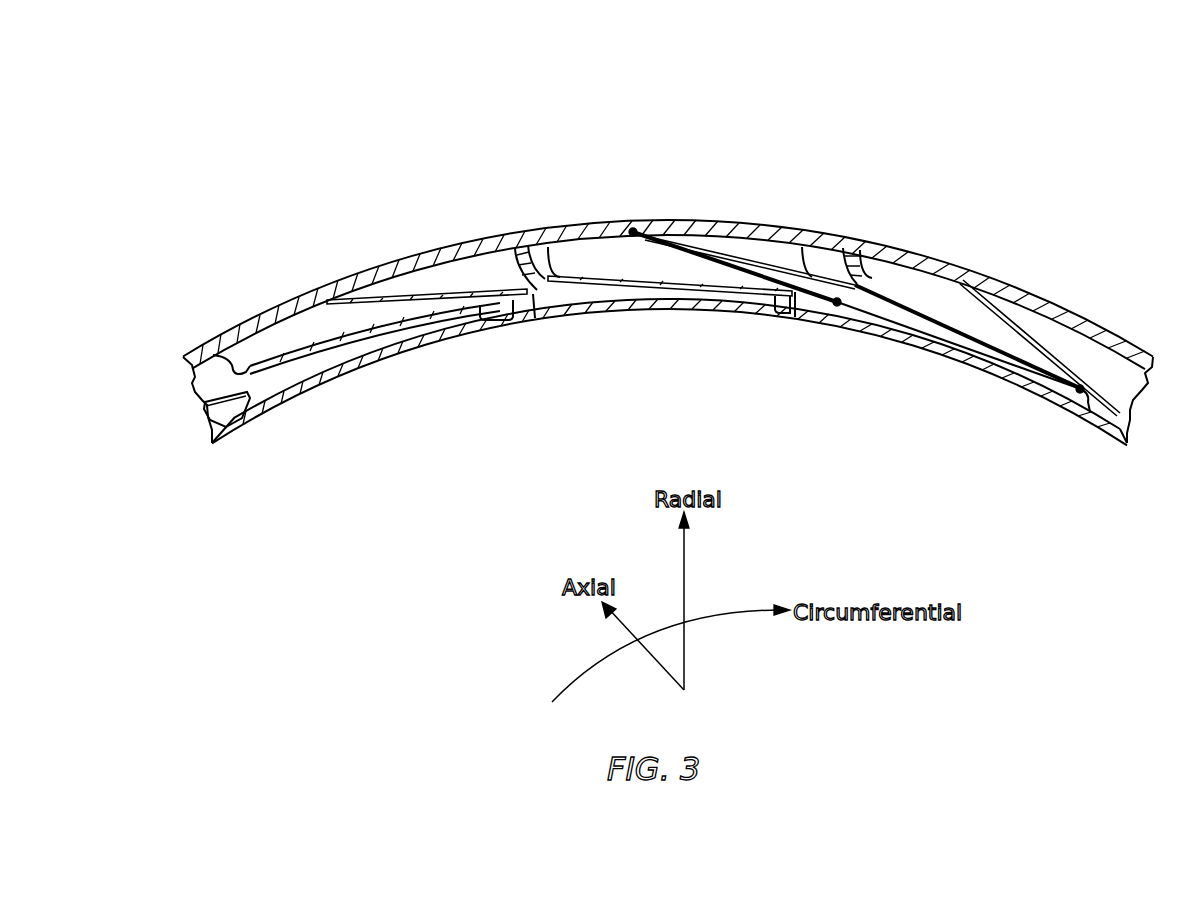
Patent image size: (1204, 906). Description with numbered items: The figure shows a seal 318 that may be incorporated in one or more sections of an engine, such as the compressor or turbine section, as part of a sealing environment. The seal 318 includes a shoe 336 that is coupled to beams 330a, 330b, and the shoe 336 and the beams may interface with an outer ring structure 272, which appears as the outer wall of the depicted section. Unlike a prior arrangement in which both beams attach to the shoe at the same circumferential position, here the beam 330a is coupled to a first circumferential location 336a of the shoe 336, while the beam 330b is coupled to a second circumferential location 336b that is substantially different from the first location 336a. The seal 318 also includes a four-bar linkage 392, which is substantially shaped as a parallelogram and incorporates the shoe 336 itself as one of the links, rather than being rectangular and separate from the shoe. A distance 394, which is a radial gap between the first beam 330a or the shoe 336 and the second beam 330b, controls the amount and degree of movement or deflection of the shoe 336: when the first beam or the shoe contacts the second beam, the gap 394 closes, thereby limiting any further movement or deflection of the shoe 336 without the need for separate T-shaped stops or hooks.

The seal 318 is at (968, 102).
The outer ring structure 272 is at (905, 262).
The beam 330a is at (445, 290).
The beam 330b is at (594, 273).
The shoe 336 is at (654, 314).
The first location 336a is at (530, 308).
The second location 336b is at (784, 314).
The four-bar linkage 392 is at (803, 262).
The distance 394 is at (516, 246).